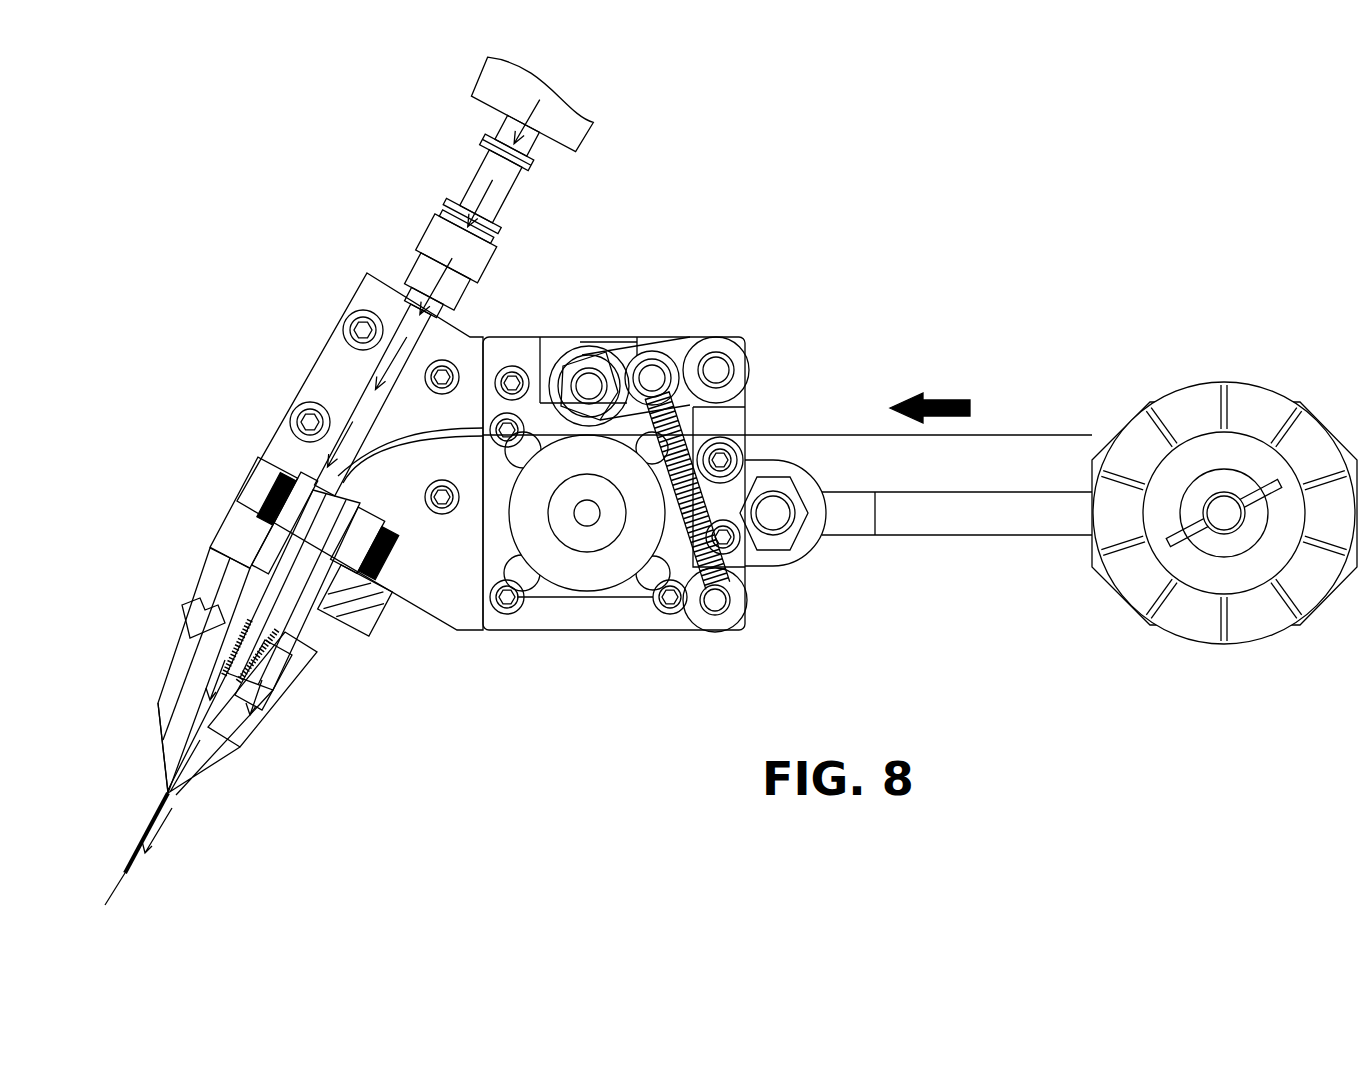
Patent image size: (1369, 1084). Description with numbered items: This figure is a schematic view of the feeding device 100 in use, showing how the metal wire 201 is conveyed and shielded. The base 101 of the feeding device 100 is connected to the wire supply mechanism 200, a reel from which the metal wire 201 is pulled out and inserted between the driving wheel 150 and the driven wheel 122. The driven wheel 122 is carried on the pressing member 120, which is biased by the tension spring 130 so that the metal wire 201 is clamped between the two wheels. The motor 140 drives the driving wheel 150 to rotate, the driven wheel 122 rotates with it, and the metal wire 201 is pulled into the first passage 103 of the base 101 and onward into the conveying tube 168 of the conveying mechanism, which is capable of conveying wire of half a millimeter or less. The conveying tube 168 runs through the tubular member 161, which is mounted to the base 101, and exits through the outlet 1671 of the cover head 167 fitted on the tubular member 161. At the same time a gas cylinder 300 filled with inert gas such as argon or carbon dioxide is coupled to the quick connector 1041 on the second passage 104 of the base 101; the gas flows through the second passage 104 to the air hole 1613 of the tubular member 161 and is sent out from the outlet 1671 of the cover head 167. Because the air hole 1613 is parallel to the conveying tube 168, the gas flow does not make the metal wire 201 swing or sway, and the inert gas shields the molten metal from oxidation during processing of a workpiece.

The feeding device 100 is at (577, 312).
The base 101 is at (467, 333).
The first passage 103 is at (405, 455).
The second passage 104 is at (367, 397).
The pressing member 120 is at (700, 340).
The driven wheel 122 is at (592, 355).
The tension spring 130 is at (660, 357).
The motor 140 is at (660, 625).
The driving wheel 150 is at (588, 583).
The tubular member 161 is at (255, 592).
The air hole 1613 is at (278, 668).
The cover head 167 is at (253, 740).
The outlet 1671 is at (167, 788).
The conveying tube 168 is at (137, 860).
The wire supply mechanism 200 is at (1155, 385).
The metal wire 201 is at (865, 432).
The gas cylinder 300 is at (583, 140).
The quick connector 1041 is at (425, 222).